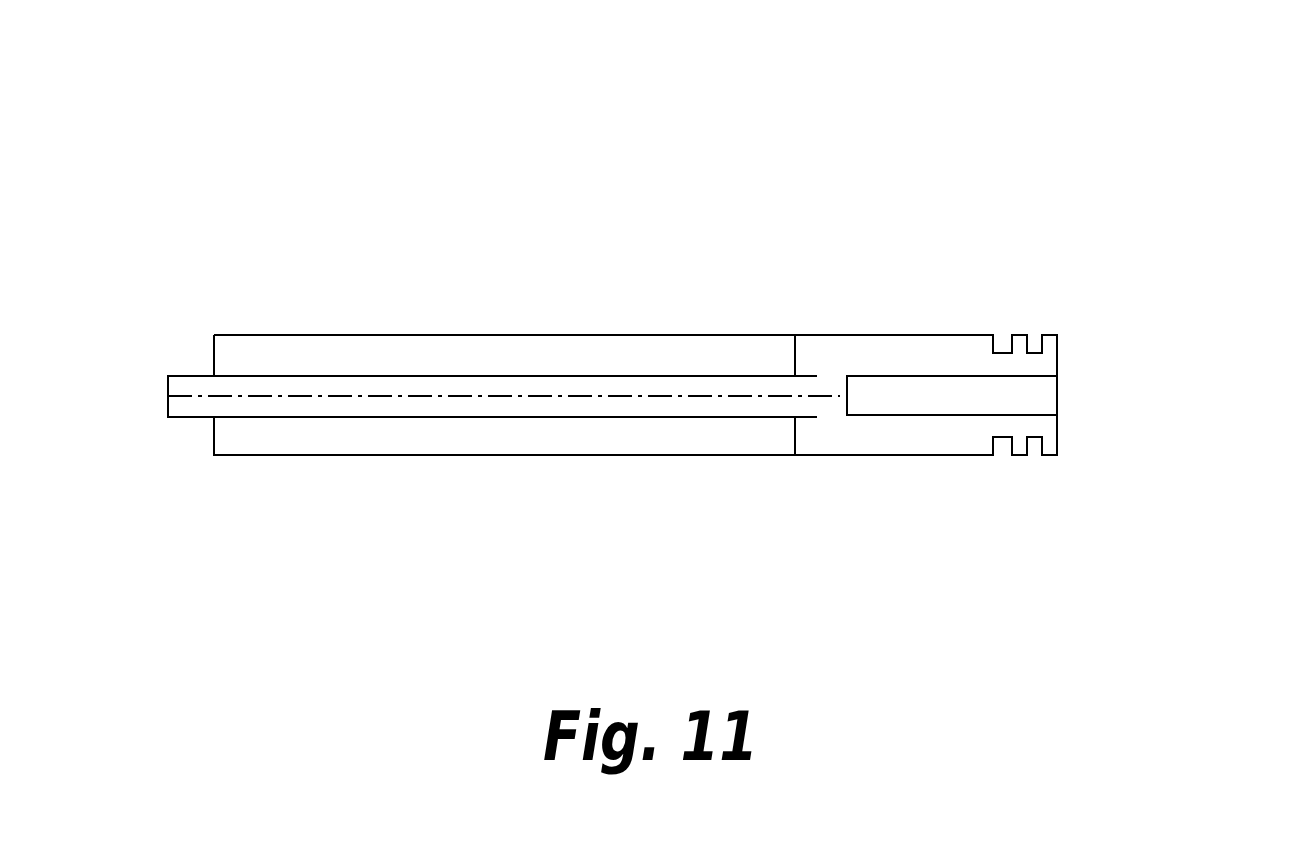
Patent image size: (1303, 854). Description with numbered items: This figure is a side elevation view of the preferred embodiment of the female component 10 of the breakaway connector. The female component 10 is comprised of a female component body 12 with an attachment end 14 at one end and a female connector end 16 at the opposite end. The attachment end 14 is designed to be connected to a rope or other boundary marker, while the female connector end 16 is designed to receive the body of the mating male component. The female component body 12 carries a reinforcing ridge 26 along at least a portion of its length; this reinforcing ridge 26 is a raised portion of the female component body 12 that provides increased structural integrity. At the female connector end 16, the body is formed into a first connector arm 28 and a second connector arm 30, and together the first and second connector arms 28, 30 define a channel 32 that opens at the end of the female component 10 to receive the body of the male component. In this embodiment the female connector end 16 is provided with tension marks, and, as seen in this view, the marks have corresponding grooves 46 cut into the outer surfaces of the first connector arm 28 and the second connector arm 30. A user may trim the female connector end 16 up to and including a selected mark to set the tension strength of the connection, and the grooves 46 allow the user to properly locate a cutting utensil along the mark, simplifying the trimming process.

The female component 10 is at (668, 287).
The female component body 12 is at (737, 397).
The attachment end 14 is at (282, 255).
The female connector end 16 is at (952, 265).
The reinforcing ridge 26 is at (472, 335).
The first connector arm 28 is at (1058, 358).
The second connector arm 30 is at (1058, 438).
The channel 32 is at (1065, 392).
The grooves 46 is at (1036, 325).